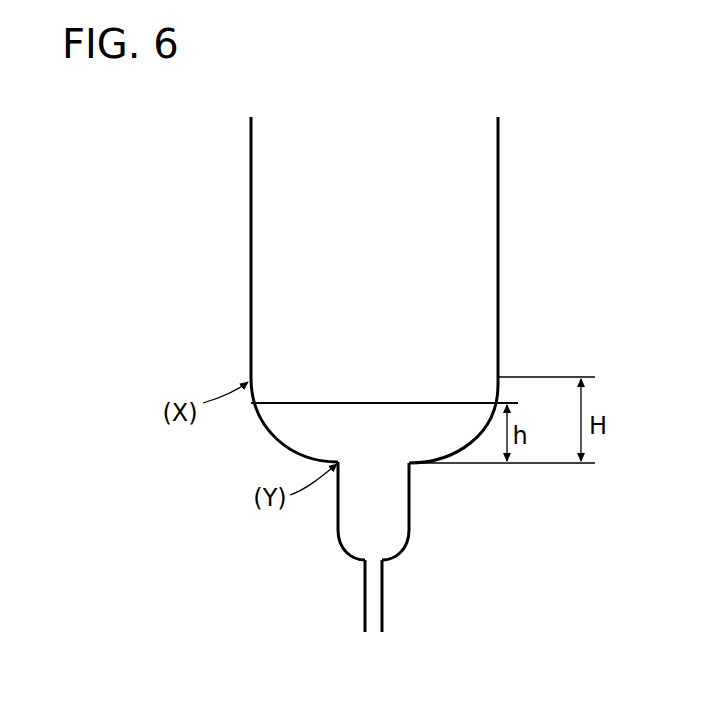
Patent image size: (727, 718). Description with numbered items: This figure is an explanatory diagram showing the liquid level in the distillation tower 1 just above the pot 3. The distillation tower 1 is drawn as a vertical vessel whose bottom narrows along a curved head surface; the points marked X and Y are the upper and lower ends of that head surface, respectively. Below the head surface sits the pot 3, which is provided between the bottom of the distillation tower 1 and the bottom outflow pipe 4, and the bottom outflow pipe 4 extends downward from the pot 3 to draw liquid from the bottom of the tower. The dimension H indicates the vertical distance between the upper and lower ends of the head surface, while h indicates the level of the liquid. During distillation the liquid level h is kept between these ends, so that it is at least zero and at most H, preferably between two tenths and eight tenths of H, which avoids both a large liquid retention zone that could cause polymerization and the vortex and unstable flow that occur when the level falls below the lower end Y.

The distillation tower 1 is at (384, 290).
The pot 3 is at (415, 523).
The bottom outflow pipe 4 is at (386, 597).